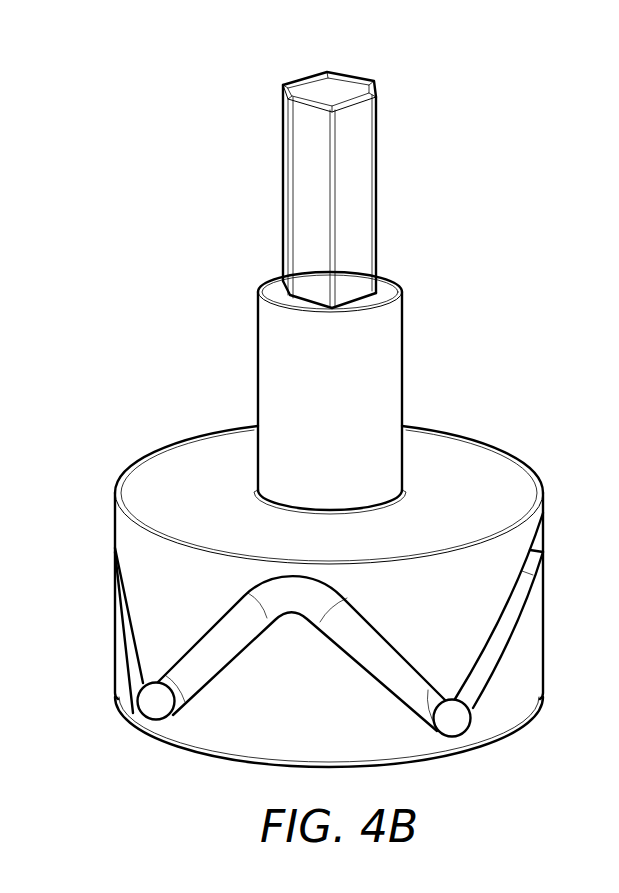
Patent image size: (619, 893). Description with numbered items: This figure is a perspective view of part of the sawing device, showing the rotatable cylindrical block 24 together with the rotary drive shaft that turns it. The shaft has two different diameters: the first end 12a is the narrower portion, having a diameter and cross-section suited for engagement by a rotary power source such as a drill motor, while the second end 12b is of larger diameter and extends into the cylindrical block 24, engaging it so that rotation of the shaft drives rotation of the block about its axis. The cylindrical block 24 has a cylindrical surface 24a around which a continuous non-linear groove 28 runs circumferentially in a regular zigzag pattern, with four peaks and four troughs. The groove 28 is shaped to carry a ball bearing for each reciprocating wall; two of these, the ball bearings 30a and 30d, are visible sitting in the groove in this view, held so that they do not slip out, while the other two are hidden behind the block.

The first end of the rotary drive shaft 12a is at (362, 137).
The second end of the rotary drive shaft 12b is at (390, 346).
The cylindrical block 24 is at (356, 590).
The cylindrical surface 24a is at (312, 715).
The groove 28 is at (513, 615).
The ball bearing 30a is at (150, 707).
The ball bearing 30d is at (455, 728).